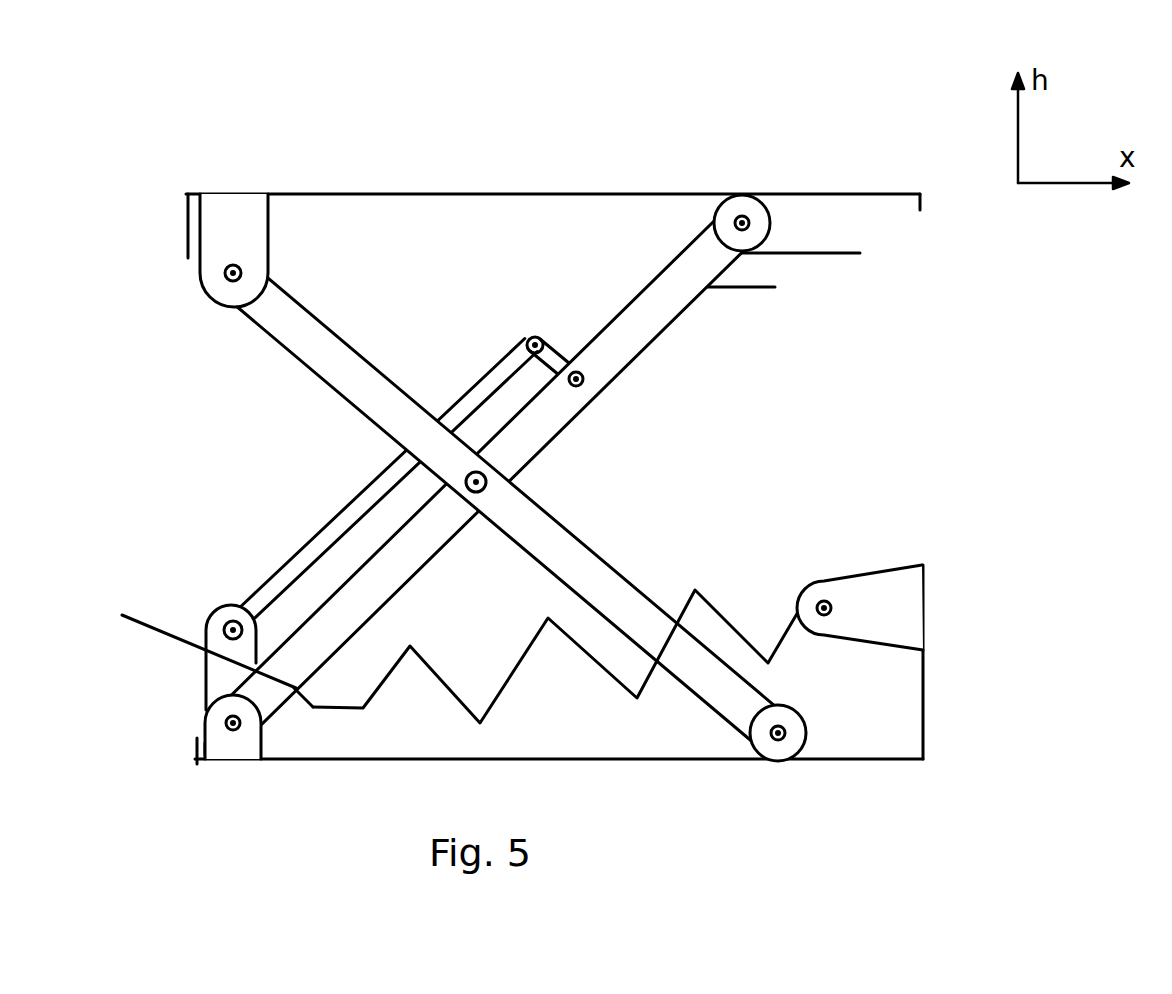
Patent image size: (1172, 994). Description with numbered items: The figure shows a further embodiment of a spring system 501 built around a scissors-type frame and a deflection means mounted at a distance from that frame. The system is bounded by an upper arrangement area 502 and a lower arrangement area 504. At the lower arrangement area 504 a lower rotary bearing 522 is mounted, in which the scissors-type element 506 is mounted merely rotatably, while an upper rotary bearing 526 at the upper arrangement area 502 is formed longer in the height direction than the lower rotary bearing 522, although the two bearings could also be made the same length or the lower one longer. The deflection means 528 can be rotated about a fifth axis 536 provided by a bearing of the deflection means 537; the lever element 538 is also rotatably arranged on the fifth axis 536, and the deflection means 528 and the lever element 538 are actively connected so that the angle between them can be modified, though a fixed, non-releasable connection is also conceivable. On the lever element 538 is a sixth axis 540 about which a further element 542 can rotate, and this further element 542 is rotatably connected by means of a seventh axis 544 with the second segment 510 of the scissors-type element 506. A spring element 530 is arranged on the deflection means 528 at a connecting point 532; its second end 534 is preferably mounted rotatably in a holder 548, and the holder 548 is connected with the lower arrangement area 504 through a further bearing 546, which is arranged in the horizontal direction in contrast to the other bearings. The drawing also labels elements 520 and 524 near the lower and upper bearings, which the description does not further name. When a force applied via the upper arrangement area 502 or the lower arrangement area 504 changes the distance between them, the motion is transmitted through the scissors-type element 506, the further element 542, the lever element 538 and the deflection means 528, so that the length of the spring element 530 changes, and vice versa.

The spring system 501 is at (648, 146).
The upper arrangement area 502 is at (343, 193).
The lower arrangement area 504 is at (682, 763).
The scissors-type element 506 is at (597, 447).
The second segment 510 is at (775, 287).
The lower pivot pin 520 is at (237, 728).
The lower rotary bearing 522 is at (213, 785).
The upper pivot pin 524 is at (225, 273).
The upper rotary bearing 526 is at (230, 218).
The deflection means 528 is at (122, 615).
The spring element 530 is at (518, 667).
The connecting point 532 is at (310, 708).
The second end 534 is at (813, 635).
The fifth axis 536 is at (226, 624).
The bearing of the deflection means 537 is at (173, 699).
The lever element 538 is at (380, 479).
The sixth axis 540 is at (533, 337).
The further element 542 is at (553, 347).
The seventh axis 544 is at (583, 378).
The further bearing 546 is at (880, 582).
The holder 548 is at (827, 603).